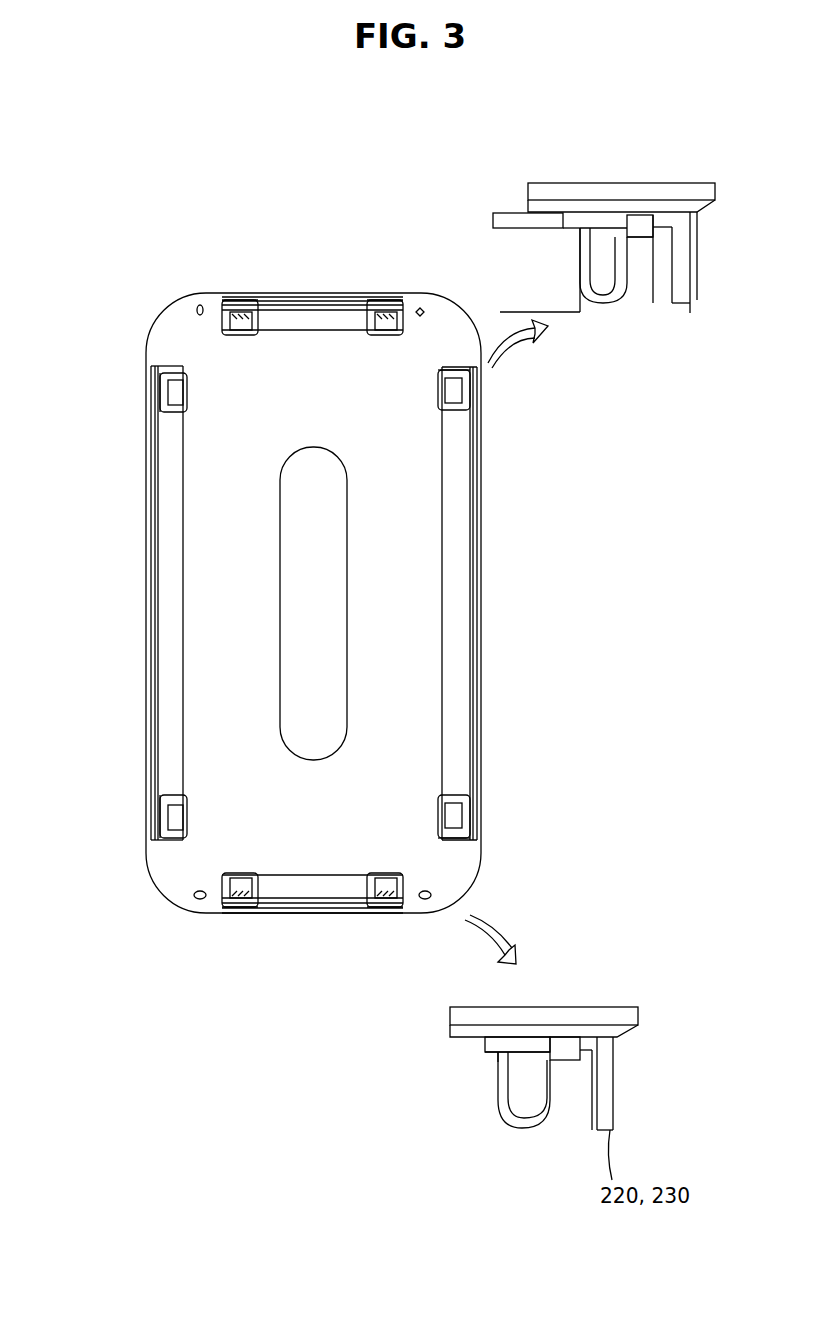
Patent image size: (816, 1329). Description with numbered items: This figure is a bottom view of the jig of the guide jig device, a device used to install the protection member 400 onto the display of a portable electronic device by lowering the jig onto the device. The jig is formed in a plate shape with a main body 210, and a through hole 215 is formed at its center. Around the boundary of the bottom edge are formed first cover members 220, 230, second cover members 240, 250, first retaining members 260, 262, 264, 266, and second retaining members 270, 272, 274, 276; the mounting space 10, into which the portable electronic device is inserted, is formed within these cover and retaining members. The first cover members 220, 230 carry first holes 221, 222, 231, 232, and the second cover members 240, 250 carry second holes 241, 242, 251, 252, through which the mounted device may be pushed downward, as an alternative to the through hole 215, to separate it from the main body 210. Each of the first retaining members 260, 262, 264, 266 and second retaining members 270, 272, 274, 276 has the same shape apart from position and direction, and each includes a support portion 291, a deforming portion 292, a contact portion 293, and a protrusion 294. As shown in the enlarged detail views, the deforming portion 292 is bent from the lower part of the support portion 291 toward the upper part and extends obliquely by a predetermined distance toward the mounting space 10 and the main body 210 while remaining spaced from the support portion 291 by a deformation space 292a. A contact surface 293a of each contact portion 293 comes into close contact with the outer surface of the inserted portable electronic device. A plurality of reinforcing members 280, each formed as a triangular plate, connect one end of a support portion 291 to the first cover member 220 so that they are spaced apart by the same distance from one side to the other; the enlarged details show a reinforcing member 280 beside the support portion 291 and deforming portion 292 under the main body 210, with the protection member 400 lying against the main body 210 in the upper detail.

The mounting space 10 is at (375, 713).
The through hole 215 is at (318, 620).
The main body 210 is at (455, 862).
The first cover member 220 is at (318, 907).
The first hole 221 is at (410, 907).
The first hole 222 is at (240, 910).
The first cover member 230 is at (310, 315).
The first hole 231 is at (410, 308).
The first hole 232 is at (258, 307).
The second cover member 240 is at (458, 520).
The second hole 241 is at (470, 828).
The second hole 242 is at (470, 380).
The second cover member 250 is at (158, 768).
The second hole 251 is at (153, 832).
The second hole 252 is at (160, 405).
The first retaining member 260 is at (375, 905).
The first retaining member 262 is at (238, 905).
The first retaining member 264 is at (385, 320).
The first retaining member 266 is at (238, 323).
The second retaining member 270 is at (468, 800).
The second retaining member 272 is at (470, 392).
The second retaining member 274 is at (150, 800).
The second retaining member 276 is at (165, 380).
The reinforcing member 280 is at (245, 313).
The support portion 291 is at (640, 250).
The deforming portion 292 is at (600, 286).
The deformation space 292a is at (527, 1058).
The contact portion 293 is at (590, 235).
The contact surface 293a is at (500, 1068).
The protrusion 294 is at (582, 233).
The protection member 400 is at (503, 220).